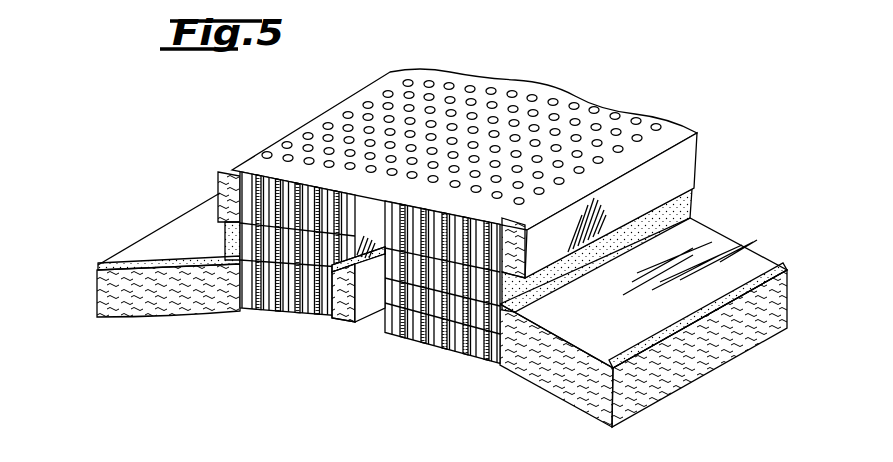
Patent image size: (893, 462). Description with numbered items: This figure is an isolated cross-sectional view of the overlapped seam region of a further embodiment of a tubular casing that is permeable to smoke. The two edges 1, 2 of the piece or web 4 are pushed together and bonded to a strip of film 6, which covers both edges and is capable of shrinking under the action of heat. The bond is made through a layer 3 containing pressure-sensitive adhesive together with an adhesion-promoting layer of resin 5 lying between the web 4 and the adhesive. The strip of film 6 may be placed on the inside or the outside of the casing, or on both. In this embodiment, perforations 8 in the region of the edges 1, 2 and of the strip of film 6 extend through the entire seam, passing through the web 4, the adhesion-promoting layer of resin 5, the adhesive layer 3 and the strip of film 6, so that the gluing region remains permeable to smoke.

The edge 1 is at (368, 306).
The edge 2 is at (377, 322).
The layer containing pressure-sensitive adhesive 3 is at (228, 237).
The web 4 is at (113, 295).
The adhesion-promoting layer of resin 5 is at (150, 258).
The strip of film 6 is at (220, 185).
The perforations 8 is at (326, 128).